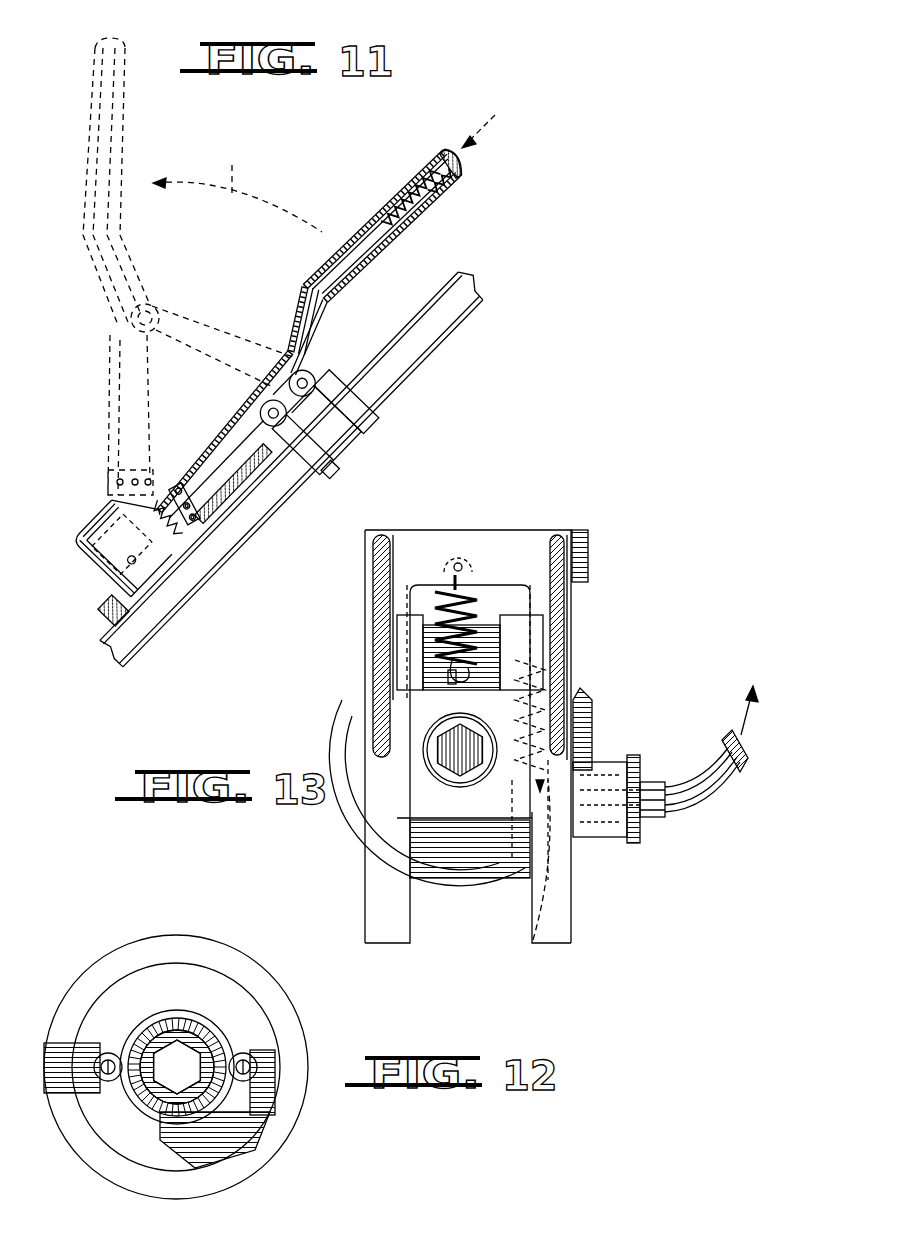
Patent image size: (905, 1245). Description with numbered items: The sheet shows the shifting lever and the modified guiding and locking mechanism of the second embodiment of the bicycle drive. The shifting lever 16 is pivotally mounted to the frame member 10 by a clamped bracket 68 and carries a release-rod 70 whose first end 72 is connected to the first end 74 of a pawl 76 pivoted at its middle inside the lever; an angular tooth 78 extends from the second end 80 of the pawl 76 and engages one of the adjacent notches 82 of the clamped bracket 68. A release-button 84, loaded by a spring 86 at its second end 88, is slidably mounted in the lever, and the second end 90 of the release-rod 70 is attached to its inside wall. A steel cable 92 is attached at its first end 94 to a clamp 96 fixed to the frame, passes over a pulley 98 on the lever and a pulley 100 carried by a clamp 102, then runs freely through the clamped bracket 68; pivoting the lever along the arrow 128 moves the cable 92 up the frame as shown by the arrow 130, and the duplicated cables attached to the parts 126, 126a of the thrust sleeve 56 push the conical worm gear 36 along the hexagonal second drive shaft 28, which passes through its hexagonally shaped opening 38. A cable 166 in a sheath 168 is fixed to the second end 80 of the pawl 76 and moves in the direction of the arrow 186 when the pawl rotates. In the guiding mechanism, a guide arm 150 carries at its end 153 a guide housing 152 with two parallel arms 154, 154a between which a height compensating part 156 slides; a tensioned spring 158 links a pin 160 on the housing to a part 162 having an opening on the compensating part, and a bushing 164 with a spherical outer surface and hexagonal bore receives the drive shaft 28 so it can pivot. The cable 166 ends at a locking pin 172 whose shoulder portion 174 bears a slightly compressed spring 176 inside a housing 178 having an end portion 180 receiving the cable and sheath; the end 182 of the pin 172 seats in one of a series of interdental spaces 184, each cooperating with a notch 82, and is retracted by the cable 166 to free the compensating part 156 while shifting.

In FIG. 11, the frame member 10 is at (457, 303).
In FIG. 11, the shifting lever 16 is at (349, 228).
In FIG. 13, the second drive shaft 28 is at (468, 780).
In FIG. 13, the conical worm gear 36 is at (355, 705).
In FIG. 12, the conical worm gear 36 is at (283, 1128).
In FIG. 12, the hexagonally shaped opening 38 is at (160, 1078).
In FIG. 12, the thrust sleeve 56 is at (161, 1006).
In FIG. 11, the clamped bracket 68 is at (88, 565).
In FIG. 11, the release-rod 70 is at (322, 307).
In FIG. 11, the first end of release-rod 72 is at (185, 500).
In FIG. 11, the first end of pawl 74 is at (163, 507).
In FIG. 11, the pawl 76 is at (196, 488).
In FIG. 11, the angular tooth 78 is at (200, 528).
In FIG. 11, the second end of pawl 80 is at (197, 522).
In FIG. 11, the notches 82 is at (162, 530).
In FIG. 11, the release-button 84 is at (462, 170).
In FIG. 11, the spring 86 is at (428, 190).
In FIG. 11, the second end of spring 88 is at (420, 166).
In FIG. 11, the second end of release-rod 90 is at (452, 155).
In FIG. 11, the steel cable 92 is at (125, 615).
In FIG. 11, the first end of cable 94 is at (312, 372).
In FIG. 11, the clamp 96 is at (352, 392).
In FIG. 11, the pulley 98 is at (306, 392).
In FIG. 11, the pulley 100 is at (262, 395).
In FIG. 11, the clamp 102 is at (323, 462).
In FIG. 12, the part of thrust sleeve 126 is at (100, 1080).
In FIG. 12, the part of thrust sleeve 126a is at (232, 1080).
In FIG. 11, the arrow 128 is at (202, 266).
In FIG. 11, the arrow 130 is at (97, 655).
In FIG. 13, the guide arm 150 is at (596, 568).
In FIG. 13, the guide housing 152 is at (528, 542).
In FIG. 13, the end of guide arm 153 is at (588, 540).
In FIG. 13, the arm 154 is at (382, 868).
In FIG. 13, the arm 154a is at (548, 930).
In FIG. 13, the height compensating part 156 is at (415, 805).
In FIG. 13, the tensioned spring 158 is at (473, 597).
In FIG. 13, the pin 160 is at (459, 563).
In FIG. 13, the part with opening 162 is at (430, 672).
In FIG. 13, the bushing 164 is at (424, 744).
In FIG. 11, the cable 166 is at (110, 620).
In FIG. 13, the cable 166 is at (733, 758).
In FIG. 13, the sheath 168 is at (712, 800).
In FIG. 13, the locking pin 172 is at (519, 867).
In FIG. 13, the shoulder portion 174 is at (603, 840).
In FIG. 13, the spring 176 is at (617, 845).
In FIG. 13, the housing 178 is at (612, 765).
In FIG. 13, the end portion 180 is at (655, 815).
In FIG. 13, the end of locking pin 182 is at (513, 838).
In FIG. 13, the interdental spaces 184 is at (575, 705).
In FIG. 11, the arrow 186 is at (88, 642).